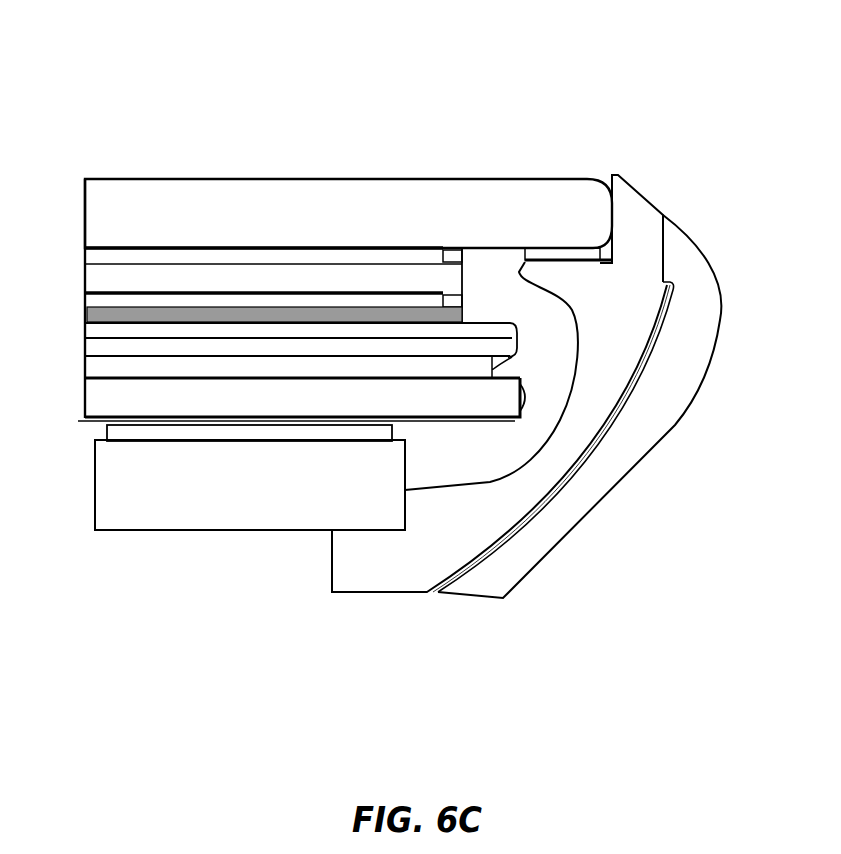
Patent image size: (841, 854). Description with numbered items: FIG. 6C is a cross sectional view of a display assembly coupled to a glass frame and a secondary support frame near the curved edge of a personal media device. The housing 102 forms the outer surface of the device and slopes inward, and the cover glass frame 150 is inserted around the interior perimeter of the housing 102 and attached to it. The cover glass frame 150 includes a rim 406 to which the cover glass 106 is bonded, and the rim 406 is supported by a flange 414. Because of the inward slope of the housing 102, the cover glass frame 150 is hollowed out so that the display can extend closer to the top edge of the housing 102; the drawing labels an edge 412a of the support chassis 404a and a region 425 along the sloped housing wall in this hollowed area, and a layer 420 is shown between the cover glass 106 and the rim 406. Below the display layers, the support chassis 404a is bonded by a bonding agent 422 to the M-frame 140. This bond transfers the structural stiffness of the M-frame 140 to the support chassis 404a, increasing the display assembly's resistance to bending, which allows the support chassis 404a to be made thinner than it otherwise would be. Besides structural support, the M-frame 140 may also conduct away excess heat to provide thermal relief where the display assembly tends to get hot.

The housing 102 is at (682, 268).
The cover glass 106 is at (348, 213).
The M-frame 140 is at (222, 495).
The cover glass frame 150 is at (633, 229).
The support chassis 404a is at (415, 397).
The rim 406 is at (593, 267).
The edge 412a is at (508, 422).
The flange 414 is at (590, 293).
The adhesive layer 420 is at (563, 248).
The bonding agent 422 is at (133, 437).
The gap 425 is at (557, 443).